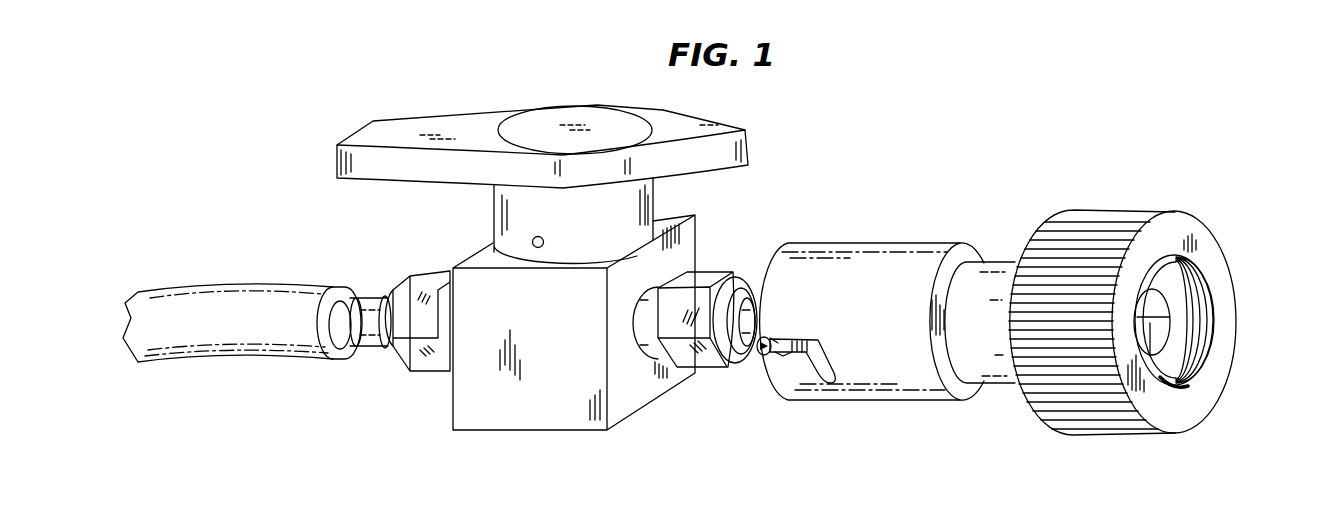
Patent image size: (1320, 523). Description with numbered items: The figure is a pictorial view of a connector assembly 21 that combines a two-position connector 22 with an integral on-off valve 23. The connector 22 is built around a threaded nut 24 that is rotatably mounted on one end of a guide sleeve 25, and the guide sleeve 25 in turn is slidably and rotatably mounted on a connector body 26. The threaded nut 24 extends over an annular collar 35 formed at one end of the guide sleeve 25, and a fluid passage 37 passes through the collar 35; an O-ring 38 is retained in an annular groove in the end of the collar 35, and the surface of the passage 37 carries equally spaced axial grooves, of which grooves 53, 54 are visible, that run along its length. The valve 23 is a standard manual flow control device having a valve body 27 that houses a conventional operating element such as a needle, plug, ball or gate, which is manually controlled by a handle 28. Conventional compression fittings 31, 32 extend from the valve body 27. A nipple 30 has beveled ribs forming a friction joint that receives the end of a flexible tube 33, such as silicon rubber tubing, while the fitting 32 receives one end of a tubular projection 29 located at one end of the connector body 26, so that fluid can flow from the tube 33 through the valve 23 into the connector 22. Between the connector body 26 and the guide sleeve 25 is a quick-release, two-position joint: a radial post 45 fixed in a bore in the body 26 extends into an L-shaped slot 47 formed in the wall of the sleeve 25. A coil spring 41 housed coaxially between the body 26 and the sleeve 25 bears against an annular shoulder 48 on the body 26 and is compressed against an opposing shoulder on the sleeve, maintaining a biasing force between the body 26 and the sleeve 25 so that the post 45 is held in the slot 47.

The connector assembly 21 is at (893, 192).
The two-position connector 22 is at (975, 231).
The on-off valve 23 is at (458, 241).
The threaded nut 24 is at (1212, 253).
The guide sleeve 25 is at (914, 385).
The connector body 26 is at (748, 295).
The valve body 27 is at (482, 405).
The handle 28 is at (424, 125).
The tubular projection 29 is at (726, 368).
The nipple 30 is at (372, 300).
The compression fitting 31 is at (418, 338).
The compression fitting 32 is at (701, 280).
The flexible tube 33 is at (238, 298).
The annular collar 35 is at (1173, 338).
The fluid passage 37 is at (1155, 305).
The O-ring 38 is at (1178, 362).
The coil spring 41 is at (819, 341).
The radial post 45 is at (763, 358).
The L-shaped slot 47 is at (793, 360).
The annular shoulder 48 is at (797, 339).
The groove 53 is at (1185, 392).
The groove 54 is at (1172, 257).